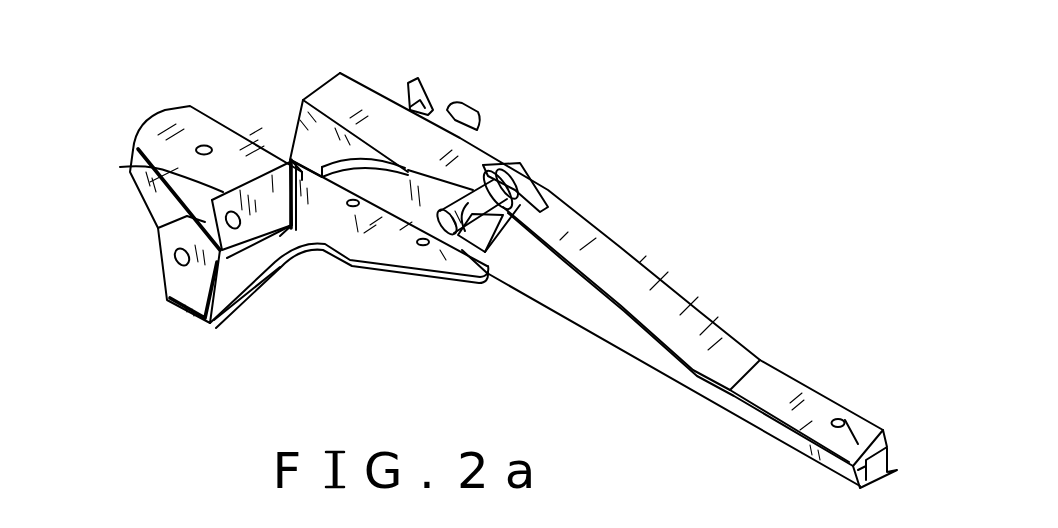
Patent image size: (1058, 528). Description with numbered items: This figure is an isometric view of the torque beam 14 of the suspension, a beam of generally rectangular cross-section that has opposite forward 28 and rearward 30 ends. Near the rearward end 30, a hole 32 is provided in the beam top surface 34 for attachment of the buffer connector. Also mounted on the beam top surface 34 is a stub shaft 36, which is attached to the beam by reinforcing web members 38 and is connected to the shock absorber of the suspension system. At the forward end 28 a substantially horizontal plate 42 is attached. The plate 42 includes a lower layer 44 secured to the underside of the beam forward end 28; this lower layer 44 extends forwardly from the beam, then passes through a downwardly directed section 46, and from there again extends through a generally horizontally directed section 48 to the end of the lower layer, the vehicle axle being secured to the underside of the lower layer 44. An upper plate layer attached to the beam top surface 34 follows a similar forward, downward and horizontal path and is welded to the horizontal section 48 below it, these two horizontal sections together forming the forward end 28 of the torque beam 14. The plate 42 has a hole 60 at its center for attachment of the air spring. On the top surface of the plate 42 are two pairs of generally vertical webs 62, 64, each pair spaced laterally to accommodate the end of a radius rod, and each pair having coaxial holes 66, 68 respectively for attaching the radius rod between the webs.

The torque beam 14 is at (593, 223).
The forward end 28 is at (213, 92).
The rearward end 30 is at (833, 388).
The hole 32 is at (843, 421).
The beam top surface 34 is at (683, 307).
The stub shaft 36 is at (487, 263).
The reinforcing web members 38 is at (487, 170).
The plate 42 is at (143, 208).
The lower layer 44 is at (353, 267).
The downwardly directed section 46 is at (220, 300).
The horizontally directed section 48 is at (180, 315).
The hole 60 is at (215, 139).
The vertical webs 62 is at (232, 192).
The vertical webs 64 is at (427, 88).
The coaxial holes 66 is at (173, 258).
The coaxial holes 68 is at (410, 107).